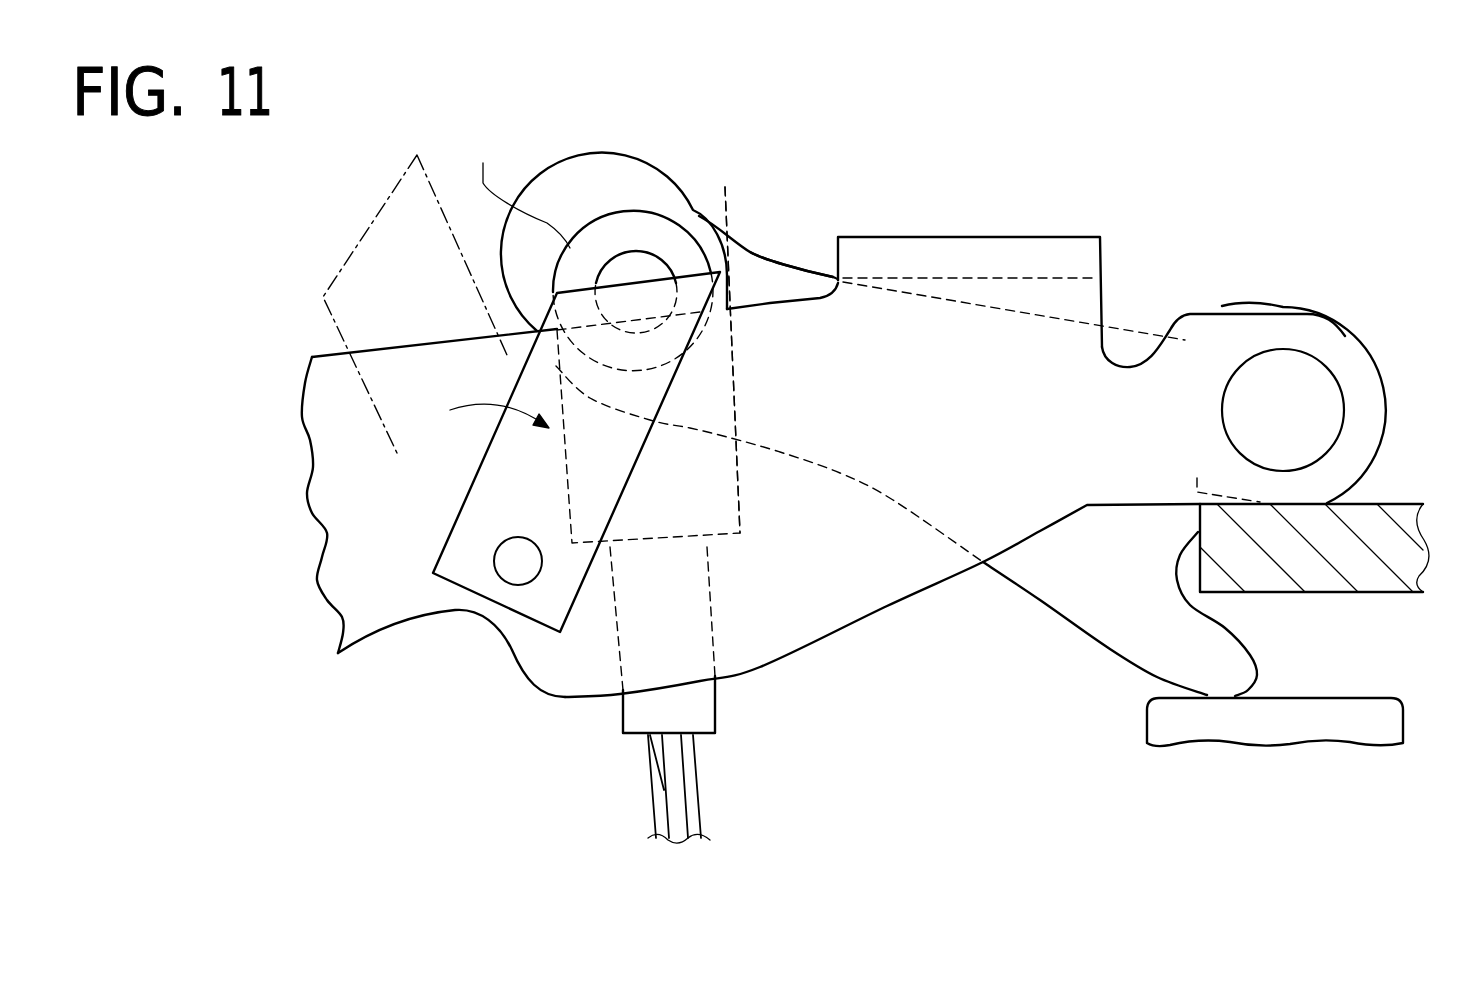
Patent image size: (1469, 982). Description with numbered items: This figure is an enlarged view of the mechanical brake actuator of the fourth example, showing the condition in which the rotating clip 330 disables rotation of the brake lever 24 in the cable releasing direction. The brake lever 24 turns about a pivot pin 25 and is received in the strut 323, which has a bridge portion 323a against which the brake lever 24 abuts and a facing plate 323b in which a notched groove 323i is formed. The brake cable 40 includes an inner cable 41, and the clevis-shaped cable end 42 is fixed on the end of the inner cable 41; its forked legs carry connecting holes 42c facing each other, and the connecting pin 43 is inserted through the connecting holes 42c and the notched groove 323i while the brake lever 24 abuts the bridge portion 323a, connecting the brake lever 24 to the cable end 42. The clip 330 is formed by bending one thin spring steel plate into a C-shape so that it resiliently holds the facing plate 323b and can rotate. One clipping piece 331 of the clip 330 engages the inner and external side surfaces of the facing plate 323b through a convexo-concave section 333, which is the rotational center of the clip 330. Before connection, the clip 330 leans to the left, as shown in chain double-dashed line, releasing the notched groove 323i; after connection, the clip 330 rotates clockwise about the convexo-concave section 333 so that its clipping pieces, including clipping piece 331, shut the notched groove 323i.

The clip 330 is at (444, 208).
The cable end 42 is at (577, 280).
The connecting pin 43 is at (631, 250).
The connecting holes 42c is at (656, 263).
The notched groove 323i is at (725, 344).
The strut 323 is at (768, 294).
The brake lever 24 is at (815, 262).
The bridge portion 323a is at (982, 237).
The pivot pin 25 is at (1341, 383).
The clipping piece 331 is at (640, 462).
The convexo-concave section 333 is at (518, 587).
The facing plate 323b is at (822, 647).
The brake cable 40 is at (716, 795).
The inner cable 41 is at (650, 780).